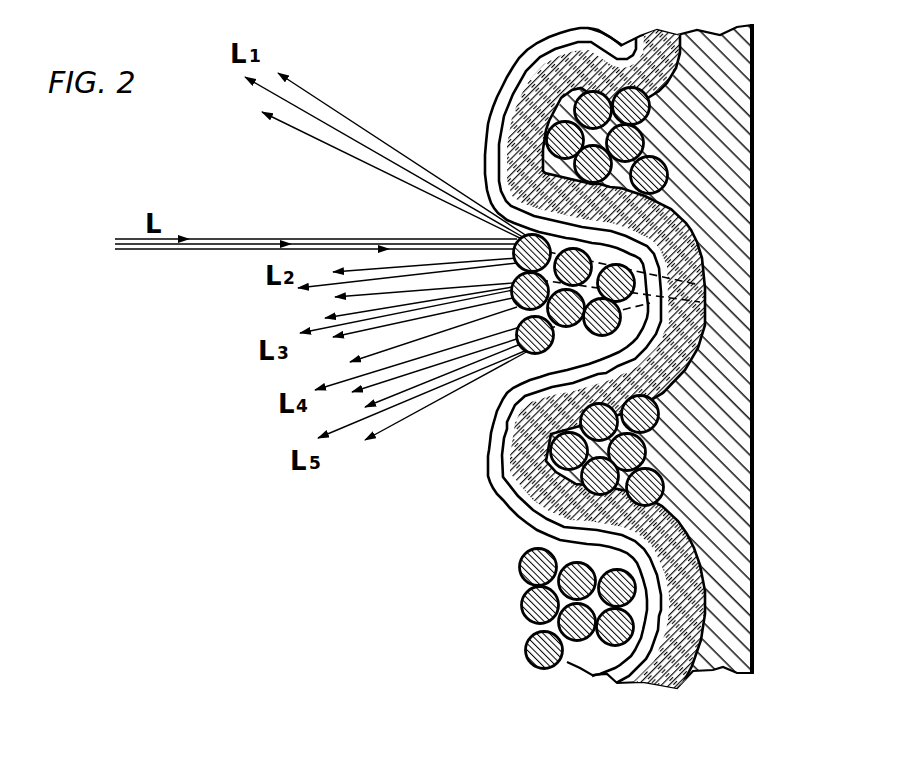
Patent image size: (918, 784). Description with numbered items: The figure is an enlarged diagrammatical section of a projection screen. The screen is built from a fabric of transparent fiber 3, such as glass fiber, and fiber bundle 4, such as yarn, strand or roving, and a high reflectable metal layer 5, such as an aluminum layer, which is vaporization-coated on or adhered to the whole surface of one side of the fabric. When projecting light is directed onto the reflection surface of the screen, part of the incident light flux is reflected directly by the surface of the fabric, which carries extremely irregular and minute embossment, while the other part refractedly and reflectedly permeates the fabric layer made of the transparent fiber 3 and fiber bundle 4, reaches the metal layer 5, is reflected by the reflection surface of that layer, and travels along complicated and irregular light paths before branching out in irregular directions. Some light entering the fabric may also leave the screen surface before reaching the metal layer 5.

The transparent fiber 3 is at (577, 75).
The fiber bundle 4 is at (633, 104).
The metal layer 5 is at (723, 178).